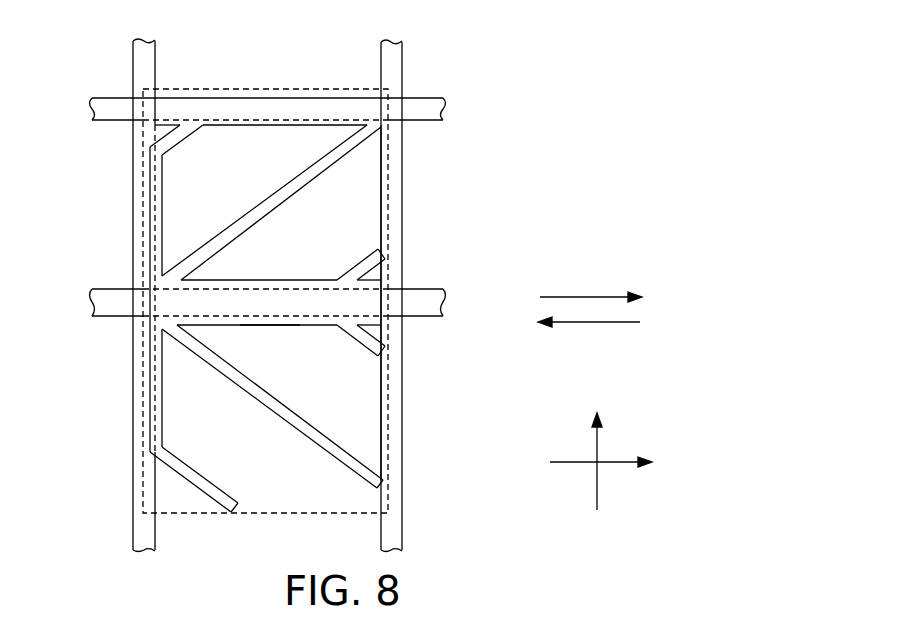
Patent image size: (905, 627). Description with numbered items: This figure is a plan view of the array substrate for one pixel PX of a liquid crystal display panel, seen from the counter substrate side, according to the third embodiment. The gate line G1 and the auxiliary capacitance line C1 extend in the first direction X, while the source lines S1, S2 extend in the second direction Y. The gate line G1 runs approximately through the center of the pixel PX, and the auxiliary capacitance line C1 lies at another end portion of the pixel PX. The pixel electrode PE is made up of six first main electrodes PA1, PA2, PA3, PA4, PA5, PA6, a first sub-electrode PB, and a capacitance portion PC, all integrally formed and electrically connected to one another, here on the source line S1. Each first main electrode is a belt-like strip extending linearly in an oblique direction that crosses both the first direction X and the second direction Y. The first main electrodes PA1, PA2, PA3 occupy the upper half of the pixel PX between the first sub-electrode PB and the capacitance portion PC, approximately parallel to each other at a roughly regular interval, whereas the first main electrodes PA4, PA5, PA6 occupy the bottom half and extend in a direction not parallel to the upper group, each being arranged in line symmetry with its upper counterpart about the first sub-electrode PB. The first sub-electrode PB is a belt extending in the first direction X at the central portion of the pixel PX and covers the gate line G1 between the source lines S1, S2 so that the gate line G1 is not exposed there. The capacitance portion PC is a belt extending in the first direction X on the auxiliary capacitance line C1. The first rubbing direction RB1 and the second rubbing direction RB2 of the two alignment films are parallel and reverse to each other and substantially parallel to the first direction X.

The source line S1 is at (144, 41).
The source line S2 is at (391, 42).
The auxiliary capacitance line C1 is at (90, 110).
The gate line G1 is at (90, 302).
The pixel PX is at (281, 89).
The capacitance portion PC is at (267, 126).
The pixel electrode PE is at (144, 232).
The first main electrode PA1 is at (178, 144).
The first main electrode PA2 is at (294, 186).
The first main electrode PA3 is at (365, 263).
The first main electrode PA4 is at (222, 497).
The first main electrode PA5 is at (323, 448).
The first main electrode PA6 is at (360, 338).
The first sub-electrode PB is at (288, 327).
The first rubbing direction RB1 is at (606, 326).
The second rubbing direction RB2 is at (590, 294).
The first direction X is at (601, 476).
The second direction Y is at (605, 461).